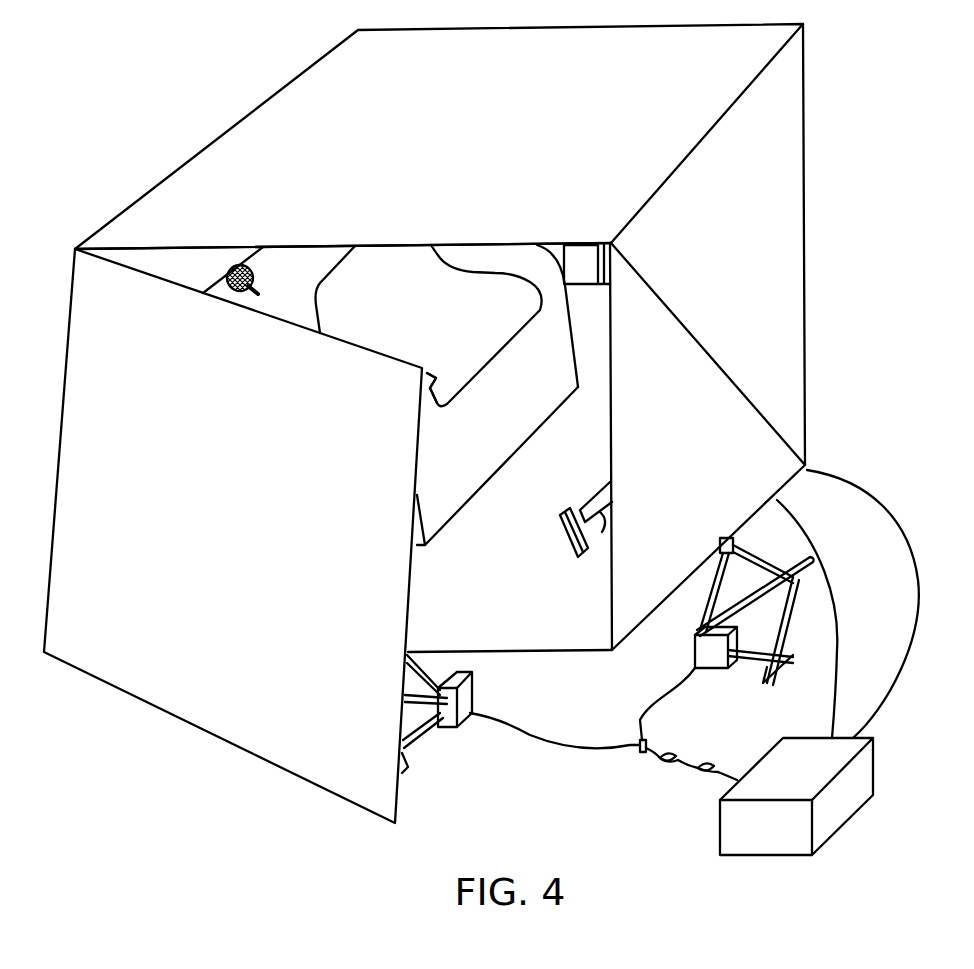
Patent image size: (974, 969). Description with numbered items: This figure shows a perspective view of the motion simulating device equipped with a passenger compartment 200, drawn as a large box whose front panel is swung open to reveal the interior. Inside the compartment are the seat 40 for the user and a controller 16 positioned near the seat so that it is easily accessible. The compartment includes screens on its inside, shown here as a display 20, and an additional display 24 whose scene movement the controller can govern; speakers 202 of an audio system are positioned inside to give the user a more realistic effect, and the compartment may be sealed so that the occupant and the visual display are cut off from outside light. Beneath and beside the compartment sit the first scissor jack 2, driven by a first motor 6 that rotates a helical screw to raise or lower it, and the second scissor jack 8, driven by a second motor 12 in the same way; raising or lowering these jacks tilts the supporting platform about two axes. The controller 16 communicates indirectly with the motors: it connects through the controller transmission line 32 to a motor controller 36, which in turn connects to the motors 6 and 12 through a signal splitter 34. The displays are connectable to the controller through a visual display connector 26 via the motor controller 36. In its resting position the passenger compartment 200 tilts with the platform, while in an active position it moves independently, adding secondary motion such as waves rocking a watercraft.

The passenger compartment 200 is at (448, 148).
The display 20 is at (569, 275).
The seat 40 is at (372, 306).
The controller 16 is at (432, 373).
The speakers 202 is at (227, 272).
The additional display 24 is at (562, 523).
The first scissor jack 2 is at (440, 748).
The first motor 6 is at (473, 683).
The second motor 12 is at (700, 647).
The second scissor jack 8 is at (747, 677).
The visual display connector 26 is at (920, 547).
The controller transmission line 32 is at (837, 608).
The signal splitter 34 is at (650, 742).
The motor controller 36 is at (853, 817).